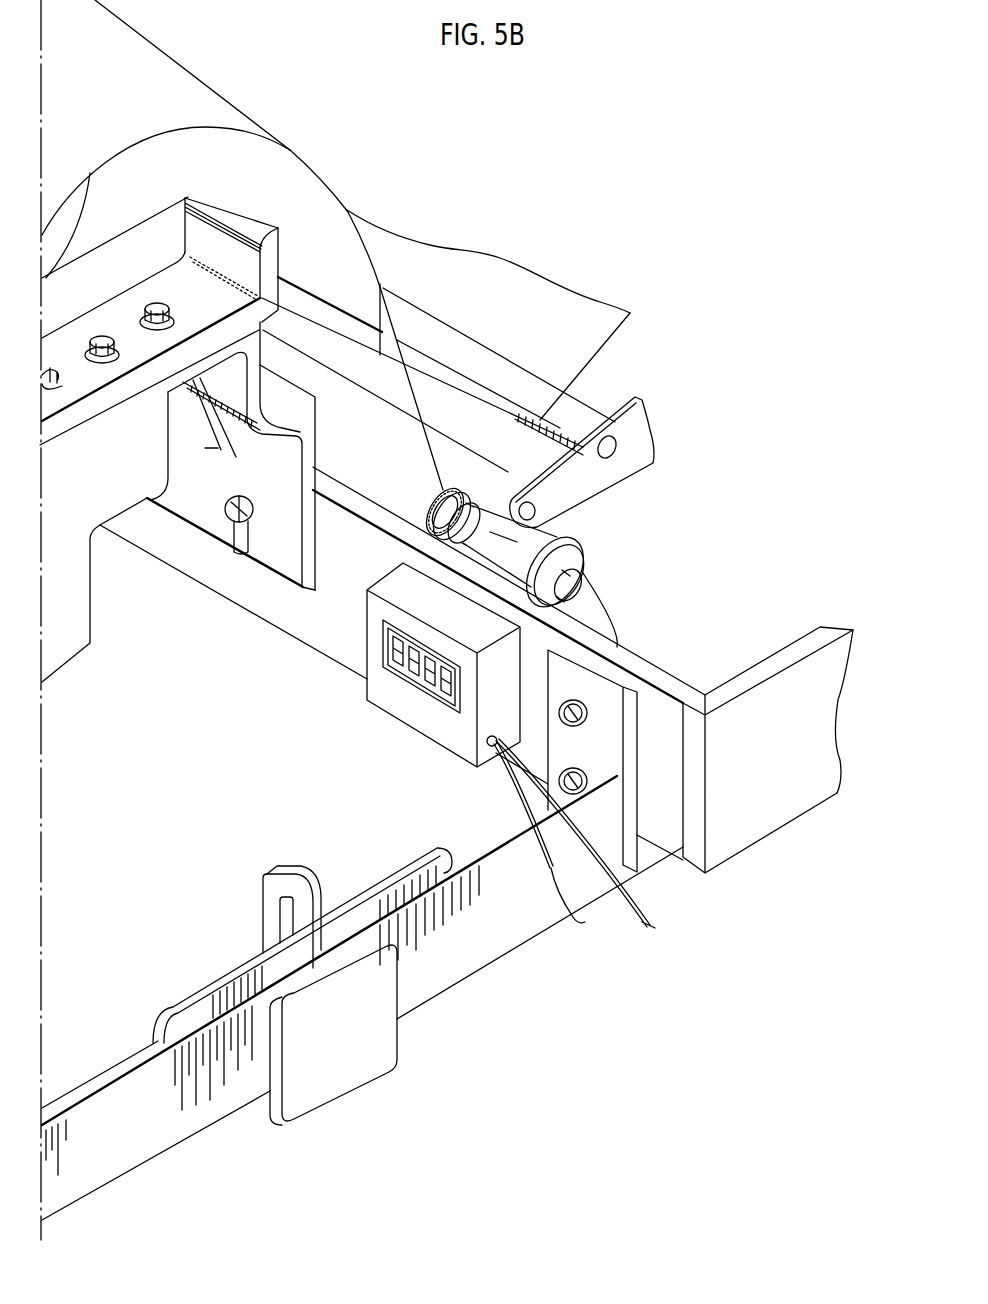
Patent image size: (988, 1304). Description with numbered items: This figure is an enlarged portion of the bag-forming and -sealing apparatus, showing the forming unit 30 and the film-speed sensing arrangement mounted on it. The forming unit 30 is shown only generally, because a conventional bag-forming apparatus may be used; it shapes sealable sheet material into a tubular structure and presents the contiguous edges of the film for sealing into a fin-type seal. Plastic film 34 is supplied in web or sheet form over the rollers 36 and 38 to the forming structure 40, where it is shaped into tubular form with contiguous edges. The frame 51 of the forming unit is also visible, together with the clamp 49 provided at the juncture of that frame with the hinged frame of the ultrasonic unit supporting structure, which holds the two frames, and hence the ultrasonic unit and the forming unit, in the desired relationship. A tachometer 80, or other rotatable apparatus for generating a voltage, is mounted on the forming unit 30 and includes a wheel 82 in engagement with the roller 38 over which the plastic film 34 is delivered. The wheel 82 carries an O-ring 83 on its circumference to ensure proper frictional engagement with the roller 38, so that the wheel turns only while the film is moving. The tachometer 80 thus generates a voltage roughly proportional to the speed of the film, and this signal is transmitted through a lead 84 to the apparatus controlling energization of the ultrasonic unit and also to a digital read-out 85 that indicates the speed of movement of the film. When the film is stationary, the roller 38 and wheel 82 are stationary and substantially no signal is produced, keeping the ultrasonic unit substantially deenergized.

The forming unit 30 is at (228, 213).
The plastic film 34 is at (553, 300).
The roller 36 is at (573, 407).
The roller 38 is at (506, 480).
The forming structure 40 is at (78, 218).
The clamp 49 is at (358, 1073).
The frame 51 is at (465, 957).
The tachometer 80 is at (557, 539).
The wheel 82 is at (445, 540).
The O-ring 83 is at (432, 496).
The lead 84 is at (620, 623).
The digital read-out 85 is at (413, 707).